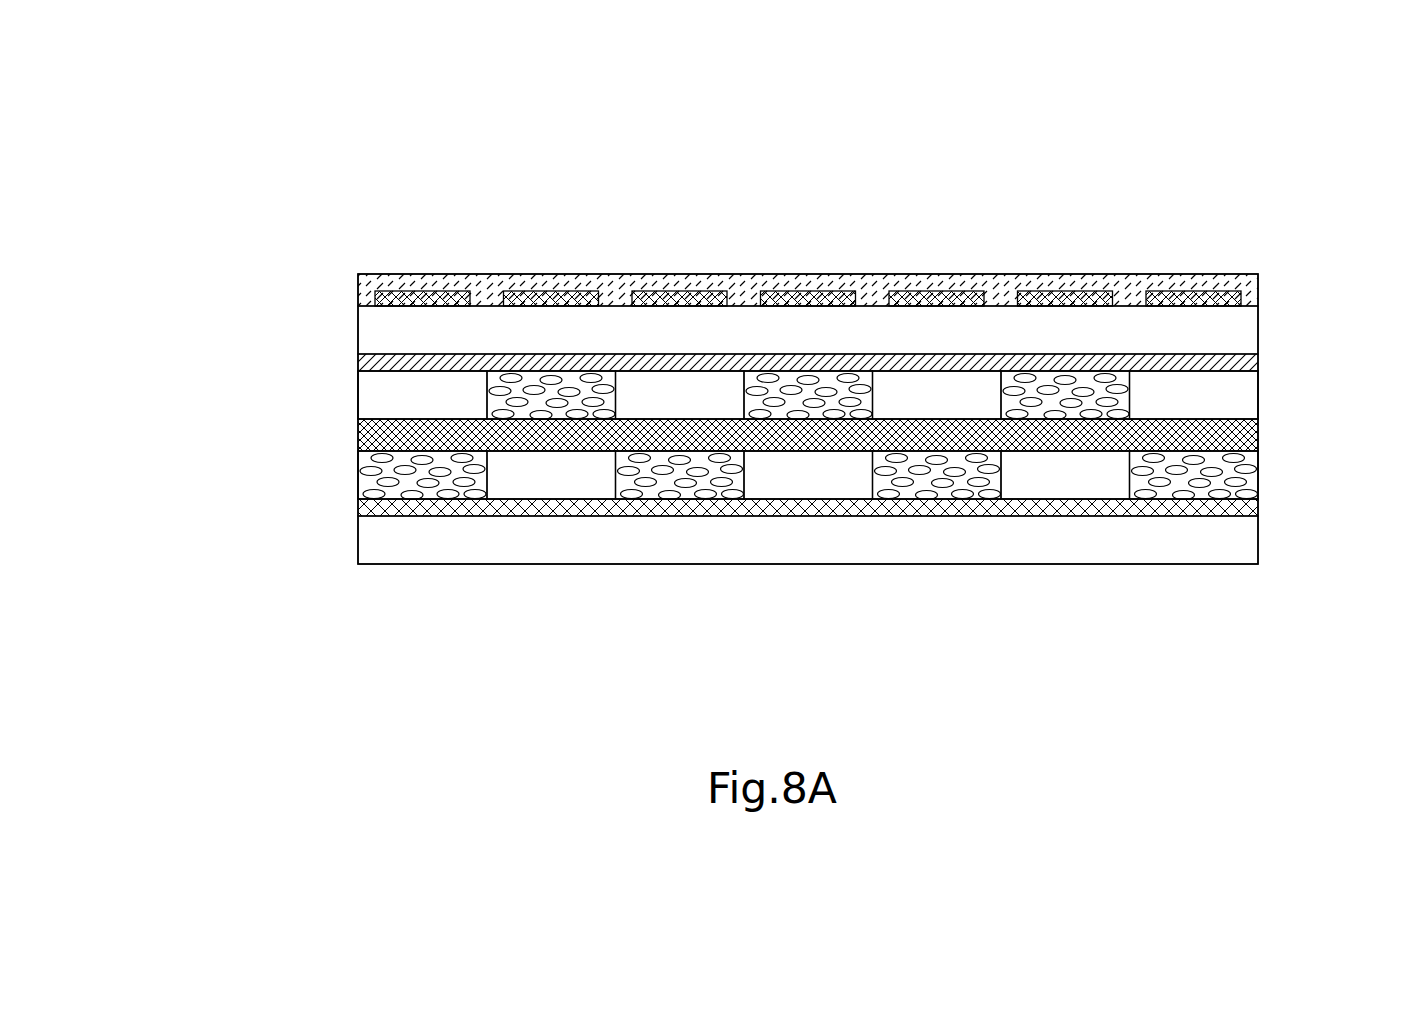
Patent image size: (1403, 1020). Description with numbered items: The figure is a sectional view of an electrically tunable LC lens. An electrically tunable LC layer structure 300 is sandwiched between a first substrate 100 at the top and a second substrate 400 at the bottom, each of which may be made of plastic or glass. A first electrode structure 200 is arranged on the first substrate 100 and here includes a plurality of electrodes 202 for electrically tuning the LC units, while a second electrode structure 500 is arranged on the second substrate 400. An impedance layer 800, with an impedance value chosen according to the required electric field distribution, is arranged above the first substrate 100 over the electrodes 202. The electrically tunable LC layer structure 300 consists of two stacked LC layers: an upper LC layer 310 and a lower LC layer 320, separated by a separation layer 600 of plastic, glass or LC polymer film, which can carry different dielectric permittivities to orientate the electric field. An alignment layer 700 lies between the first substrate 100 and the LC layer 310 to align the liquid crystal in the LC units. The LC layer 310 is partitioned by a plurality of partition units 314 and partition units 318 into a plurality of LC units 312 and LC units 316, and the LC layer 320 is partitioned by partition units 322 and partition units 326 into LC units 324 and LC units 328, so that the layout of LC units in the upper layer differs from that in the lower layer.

The first substrate 100 is at (1250, 337).
The first electrode structure 200 is at (826, 199).
The electrodes 202 is at (399, 290).
The electrically tunable LC layer structure 300 is at (250, 383).
The LC layer 310 is at (342, 410).
The LC units 312 is at (754, 385).
The partition units 314 is at (624, 388).
The LC units 316 is at (494, 378).
The partition units 318 is at (383, 388).
The LC layer 320 is at (345, 507).
The partition units 322 is at (807, 492).
The LC units 324 is at (680, 492).
The partition units 326 is at (552, 493).
The LC units 328 is at (425, 492).
The second substrate 400 is at (1250, 537).
The second electrode structure 500 is at (1252, 507).
The separation layer 600 is at (1252, 435).
The alignment layer 700 is at (1250, 362).
The impedance layer 800 is at (362, 297).